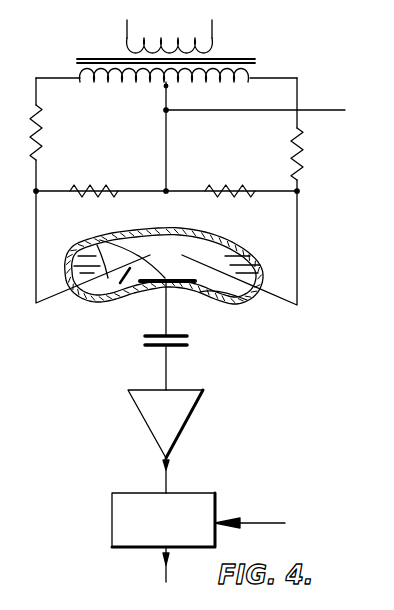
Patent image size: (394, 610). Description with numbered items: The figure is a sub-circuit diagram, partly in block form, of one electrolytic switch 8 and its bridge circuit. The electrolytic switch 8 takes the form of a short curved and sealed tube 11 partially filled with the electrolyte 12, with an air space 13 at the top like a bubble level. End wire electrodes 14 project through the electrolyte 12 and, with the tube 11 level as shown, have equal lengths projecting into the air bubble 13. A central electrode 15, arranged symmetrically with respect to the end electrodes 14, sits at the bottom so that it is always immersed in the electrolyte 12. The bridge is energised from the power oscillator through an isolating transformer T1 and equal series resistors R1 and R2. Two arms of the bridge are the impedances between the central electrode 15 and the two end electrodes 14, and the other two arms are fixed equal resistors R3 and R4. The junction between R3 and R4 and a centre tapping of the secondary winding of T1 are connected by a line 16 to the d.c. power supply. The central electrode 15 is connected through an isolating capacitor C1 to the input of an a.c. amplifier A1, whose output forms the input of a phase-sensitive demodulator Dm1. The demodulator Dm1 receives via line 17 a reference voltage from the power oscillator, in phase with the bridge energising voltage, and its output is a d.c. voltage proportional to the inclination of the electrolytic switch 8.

The isolating transformer T1 is at (258, 62).
The series resistor R1 is at (42, 135).
The series resistor R2 is at (300, 140).
The fixed resistor R3 is at (117, 189).
The fixed resistor R4 is at (240, 190).
The isolating capacitor C1 is at (183, 347).
The a.c. amplifier A1 is at (157, 432).
The phase-sensitive demodulator Dm1 is at (112, 527).
The electrolytic switch 8 is at (113, 295).
The tube 11 is at (138, 293).
The electrolyte 12 is at (237, 256).
The air space 13 is at (213, 245).
The end wire electrodes 14 is at (88, 247).
The central electrode 15 is at (190, 285).
The line 16 is at (326, 110).
The line 17 is at (255, 522).